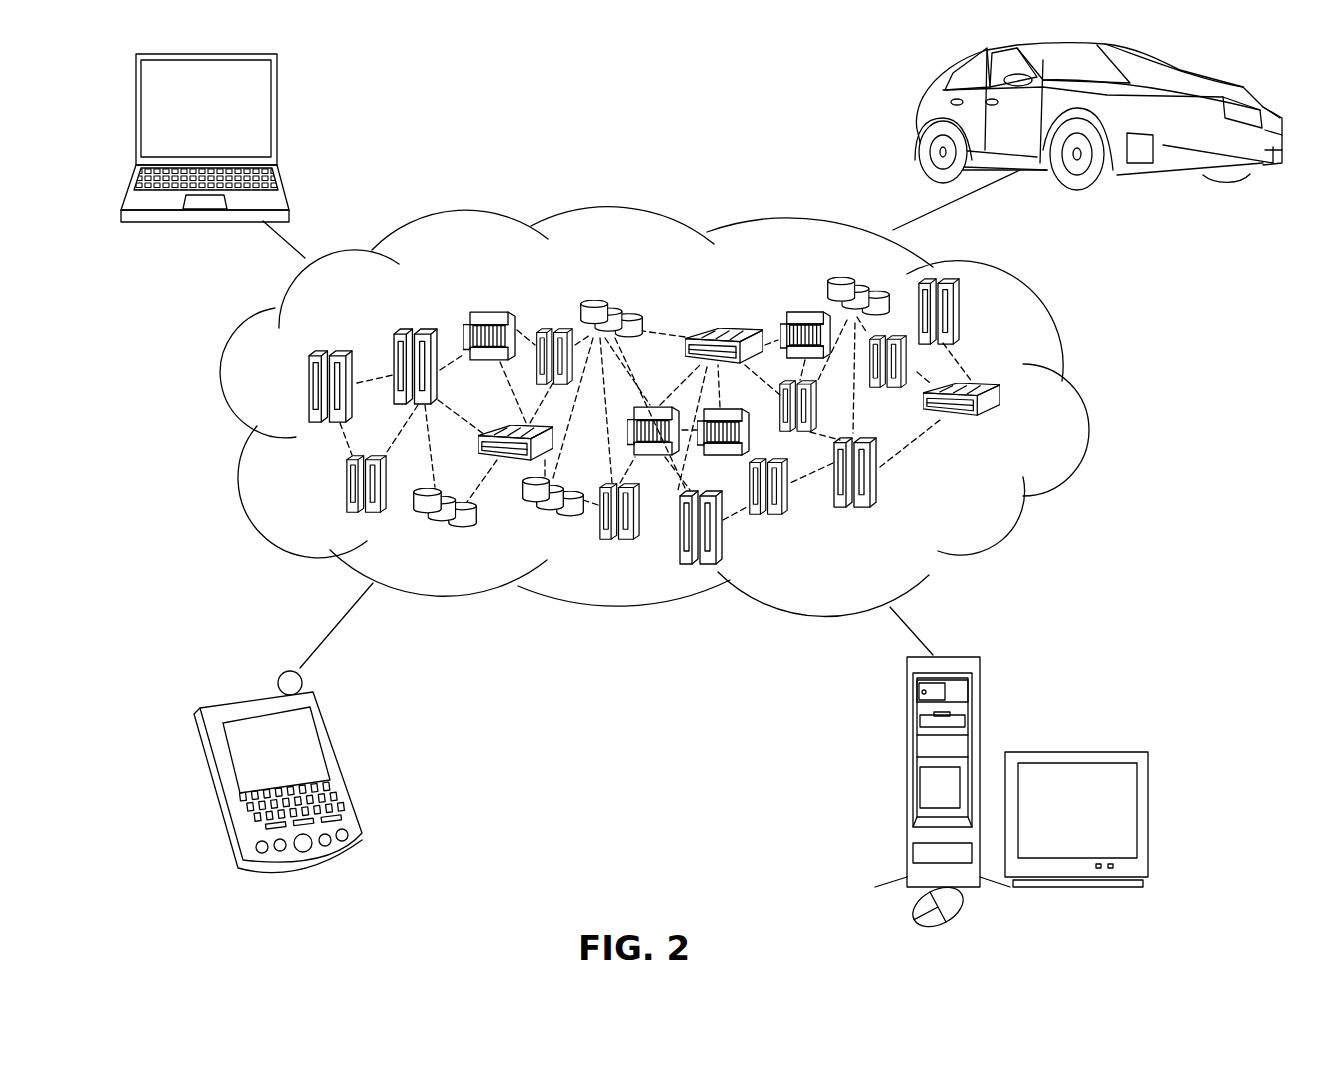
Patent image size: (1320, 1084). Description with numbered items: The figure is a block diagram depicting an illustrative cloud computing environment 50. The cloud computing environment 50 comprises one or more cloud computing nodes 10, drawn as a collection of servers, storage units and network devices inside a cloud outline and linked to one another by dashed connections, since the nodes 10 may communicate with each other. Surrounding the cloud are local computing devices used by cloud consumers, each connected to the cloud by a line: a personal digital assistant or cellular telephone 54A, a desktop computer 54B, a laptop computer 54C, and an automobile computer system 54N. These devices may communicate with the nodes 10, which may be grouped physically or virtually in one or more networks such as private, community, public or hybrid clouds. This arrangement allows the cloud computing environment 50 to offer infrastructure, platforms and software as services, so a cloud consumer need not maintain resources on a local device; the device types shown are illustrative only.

The cloud computing node 10 is at (993, 510).
The cloud computing environment 50 is at (1073, 400).
The personal digital assistant (PDA) or cellular telephone 54A is at (330, 730).
The desktop computer 54B is at (903, 717).
The laptop computer 54C is at (278, 93).
The automobile computer system 54N is at (920, 110).